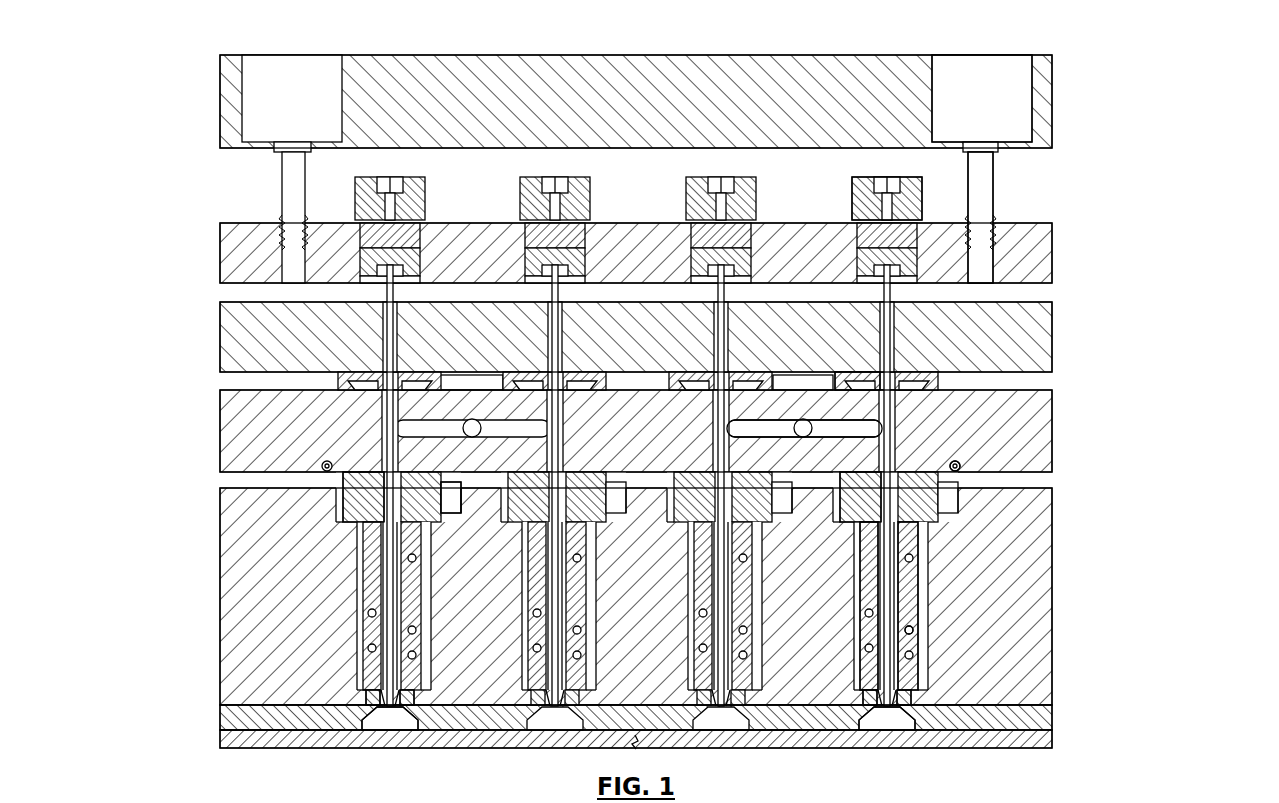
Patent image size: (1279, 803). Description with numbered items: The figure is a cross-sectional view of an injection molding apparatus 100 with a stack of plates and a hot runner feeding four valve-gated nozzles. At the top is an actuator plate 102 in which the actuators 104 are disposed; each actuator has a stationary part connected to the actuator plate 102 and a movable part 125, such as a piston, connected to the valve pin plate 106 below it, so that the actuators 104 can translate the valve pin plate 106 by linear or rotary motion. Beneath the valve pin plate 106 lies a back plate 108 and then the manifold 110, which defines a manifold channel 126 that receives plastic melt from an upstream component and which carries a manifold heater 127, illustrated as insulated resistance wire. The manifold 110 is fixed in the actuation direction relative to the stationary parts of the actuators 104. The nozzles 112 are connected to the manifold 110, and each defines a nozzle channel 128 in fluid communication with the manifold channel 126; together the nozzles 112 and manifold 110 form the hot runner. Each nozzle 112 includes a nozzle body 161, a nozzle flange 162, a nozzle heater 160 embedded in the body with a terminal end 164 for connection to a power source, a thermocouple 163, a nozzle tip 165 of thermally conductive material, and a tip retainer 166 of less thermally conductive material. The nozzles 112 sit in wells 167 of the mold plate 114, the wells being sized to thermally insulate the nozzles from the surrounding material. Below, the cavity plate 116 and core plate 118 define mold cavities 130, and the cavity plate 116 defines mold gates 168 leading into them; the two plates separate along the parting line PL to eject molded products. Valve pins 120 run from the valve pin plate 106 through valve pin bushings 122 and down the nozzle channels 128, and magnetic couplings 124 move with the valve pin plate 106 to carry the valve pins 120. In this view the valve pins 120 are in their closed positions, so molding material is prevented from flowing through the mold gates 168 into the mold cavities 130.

The injection molding apparatus 100 is at (1152, 100).
The actuator plate 102 is at (1042, 100).
The actuators 104 is at (1022, 72).
The valve pin plate 106 is at (1043, 240).
The back plate 108 is at (1040, 330).
The manifold 110 is at (1033, 410).
The nozzles 112 is at (914, 590).
The mold plate 114 is at (1037, 610).
The cavity plate 116 is at (1043, 720).
The core plate 118 is at (897, 740).
The valve pins 120 is at (890, 540).
The valve pin bushings 122 is at (954, 381).
The magnetic couplings 124 is at (942, 195).
The movable part 125 is at (982, 166).
The manifold channel 126 is at (853, 432).
The manifold heater 127 is at (957, 467).
The nozzle channels 128 is at (895, 503).
The mold cavities 130 is at (875, 720).
The nozzle heater 160 is at (918, 682).
The nozzle body 161 is at (930, 645).
The nozzle flange 162 is at (352, 520).
The thermocouple 163 is at (923, 697).
The terminal end 164 is at (450, 500).
The nozzle tip 165 is at (383, 710).
The tip retainer 166 is at (290, 728).
The wells 167 is at (358, 686).
The mold gates 168 is at (392, 716).
The parting line PL is at (775, 720).